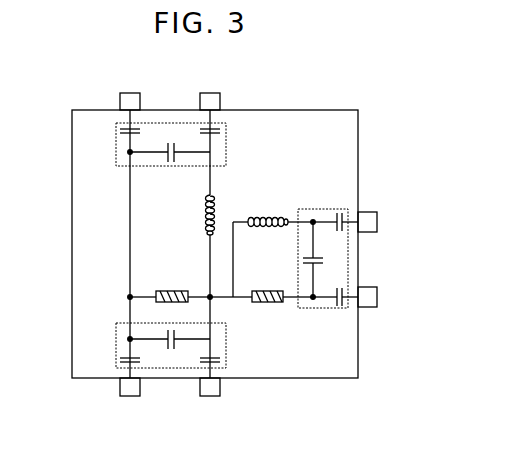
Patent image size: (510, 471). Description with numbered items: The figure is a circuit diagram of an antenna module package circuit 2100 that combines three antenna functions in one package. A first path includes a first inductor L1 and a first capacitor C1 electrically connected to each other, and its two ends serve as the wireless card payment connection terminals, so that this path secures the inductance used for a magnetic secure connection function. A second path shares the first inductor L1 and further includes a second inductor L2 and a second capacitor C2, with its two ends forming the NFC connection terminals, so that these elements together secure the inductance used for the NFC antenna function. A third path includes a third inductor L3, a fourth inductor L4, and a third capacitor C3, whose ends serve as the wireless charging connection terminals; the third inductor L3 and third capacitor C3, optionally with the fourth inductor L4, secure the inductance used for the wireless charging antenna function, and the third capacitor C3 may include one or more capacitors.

The antenna module package circuit 2100 is at (100, 74).
The first capacitor C1 is at (171, 345).
The second capacitor C2 is at (171, 144).
The third capacitor C3 is at (328, 258).
The first inductor L1 is at (170, 289).
The second inductor L2 is at (201, 215).
The third inductor L3 is at (282, 289).
The fourth inductor L4 is at (280, 214).